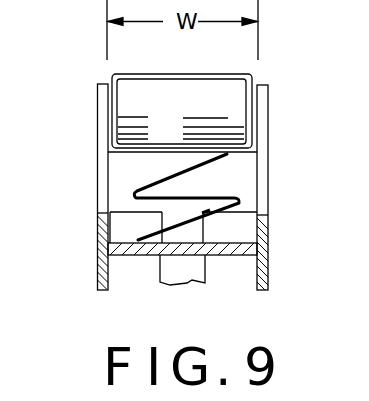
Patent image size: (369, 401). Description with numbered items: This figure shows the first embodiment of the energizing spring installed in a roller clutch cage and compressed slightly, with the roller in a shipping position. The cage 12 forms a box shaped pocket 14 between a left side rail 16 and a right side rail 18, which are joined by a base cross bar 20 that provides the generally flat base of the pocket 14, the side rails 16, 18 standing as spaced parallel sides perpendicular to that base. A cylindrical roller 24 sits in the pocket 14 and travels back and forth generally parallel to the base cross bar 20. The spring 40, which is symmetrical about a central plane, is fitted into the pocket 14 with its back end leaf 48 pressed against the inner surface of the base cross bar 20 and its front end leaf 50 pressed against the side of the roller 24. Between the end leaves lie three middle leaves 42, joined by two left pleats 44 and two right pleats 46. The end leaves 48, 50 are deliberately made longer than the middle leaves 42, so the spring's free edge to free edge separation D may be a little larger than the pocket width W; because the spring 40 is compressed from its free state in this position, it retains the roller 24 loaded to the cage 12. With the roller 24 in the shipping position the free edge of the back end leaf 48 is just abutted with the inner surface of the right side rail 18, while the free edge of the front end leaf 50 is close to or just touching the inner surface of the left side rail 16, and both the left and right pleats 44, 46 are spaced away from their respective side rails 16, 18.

The cage 12 is at (92, 277).
The pocket 14 is at (122, 187).
The left side rail 16 is at (101, 117).
The right side rail 18 is at (262, 110).
The base cross bar 20 is at (158, 257).
The roller 24 is at (213, 108).
The spring 40 is at (138, 167).
The middle leaves 42 is at (182, 223).
The left pleats 44 is at (137, 240).
The right pleats 46 is at (240, 206).
The back end leaf 48 is at (213, 256).
The front end leaf 50 is at (212, 143).